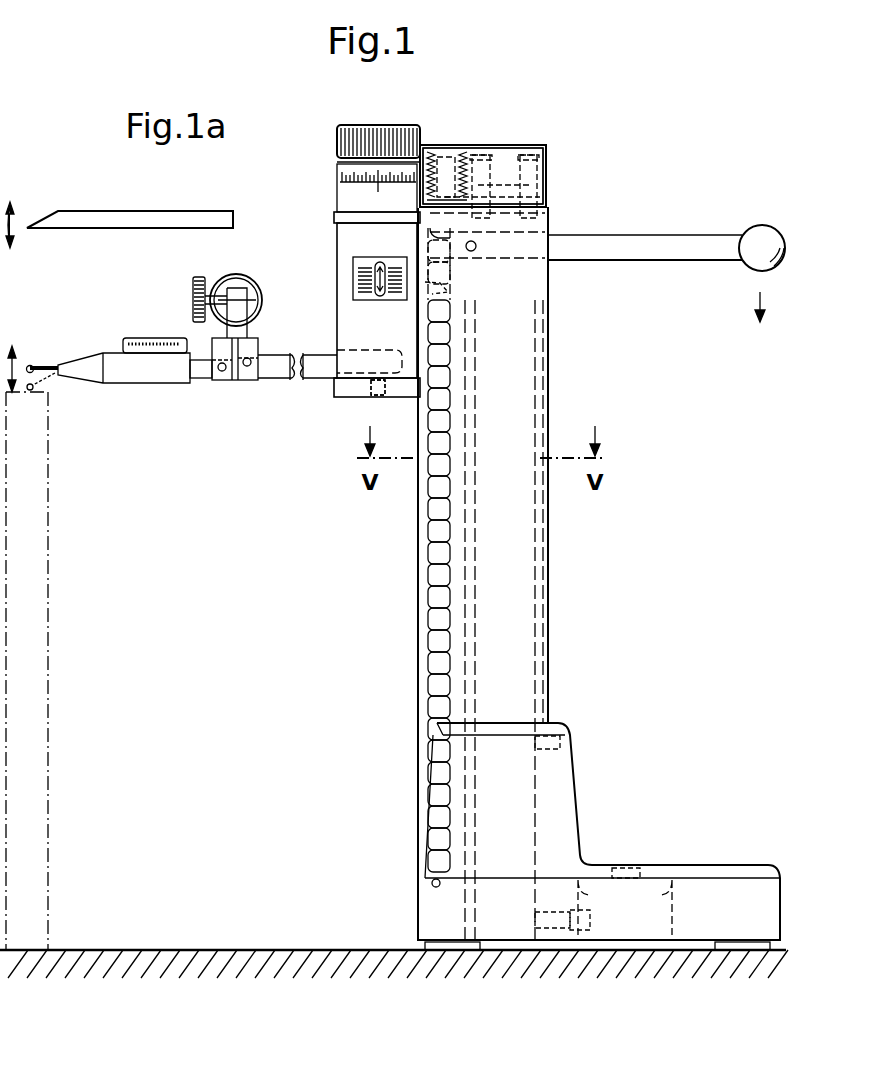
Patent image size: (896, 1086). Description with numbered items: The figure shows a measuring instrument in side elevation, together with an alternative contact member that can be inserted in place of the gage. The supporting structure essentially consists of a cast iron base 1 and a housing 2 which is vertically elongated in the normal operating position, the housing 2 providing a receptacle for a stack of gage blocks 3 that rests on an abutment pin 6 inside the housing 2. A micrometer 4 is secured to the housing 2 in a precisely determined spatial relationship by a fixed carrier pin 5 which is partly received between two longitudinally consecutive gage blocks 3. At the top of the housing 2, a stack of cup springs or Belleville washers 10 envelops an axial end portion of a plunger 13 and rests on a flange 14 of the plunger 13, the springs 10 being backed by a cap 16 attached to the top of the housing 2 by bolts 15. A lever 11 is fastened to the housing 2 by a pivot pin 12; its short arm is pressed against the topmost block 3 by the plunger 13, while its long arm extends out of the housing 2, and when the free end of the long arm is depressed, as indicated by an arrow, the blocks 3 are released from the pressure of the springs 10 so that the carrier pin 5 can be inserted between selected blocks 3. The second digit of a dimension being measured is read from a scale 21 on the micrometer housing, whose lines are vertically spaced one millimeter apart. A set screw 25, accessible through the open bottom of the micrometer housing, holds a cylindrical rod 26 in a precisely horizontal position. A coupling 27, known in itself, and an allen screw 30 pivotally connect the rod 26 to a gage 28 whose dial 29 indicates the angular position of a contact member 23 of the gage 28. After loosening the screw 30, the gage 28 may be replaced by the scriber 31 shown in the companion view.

In FIG. 1, the base 1 is at (566, 800).
In FIG. 1, the housing 2 is at (548, 584).
In FIG. 1, the gage blocks 3 is at (428, 554).
In FIG. 1, the micrometer 4 is at (337, 268).
In FIG. 1, the carrier pin 5 is at (445, 295).
In FIG. 1, the abutment pin 6 is at (432, 883).
In FIG. 1, the cup springs 10 is at (432, 145).
In FIG. 1, the lever 11 is at (672, 261).
In FIG. 1, the pivot pin 12 is at (474, 252).
In FIG. 1, the plunger 13 is at (447, 158).
In FIG. 1, the flange 14 is at (470, 205).
In FIG. 1, the bolts 15 is at (486, 148).
In FIG. 1, the cap 16 is at (548, 172).
In FIG. 1, the scale 21 is at (361, 300).
In FIG. 1, the contact member 23 is at (50, 366).
In FIG. 1, the set screw 25 is at (376, 397).
In FIG. 1, the cylindrical rod 26 is at (278, 380).
In FIG. 1, the coupling 27 is at (258, 340).
In FIG. 1, the gage 28 is at (143, 383).
In FIG. 1, the dial 29 is at (155, 338).
In FIG. 1, the allen screw 30 is at (222, 382).
In FIG. 1A, the scriber 31 is at (140, 220).